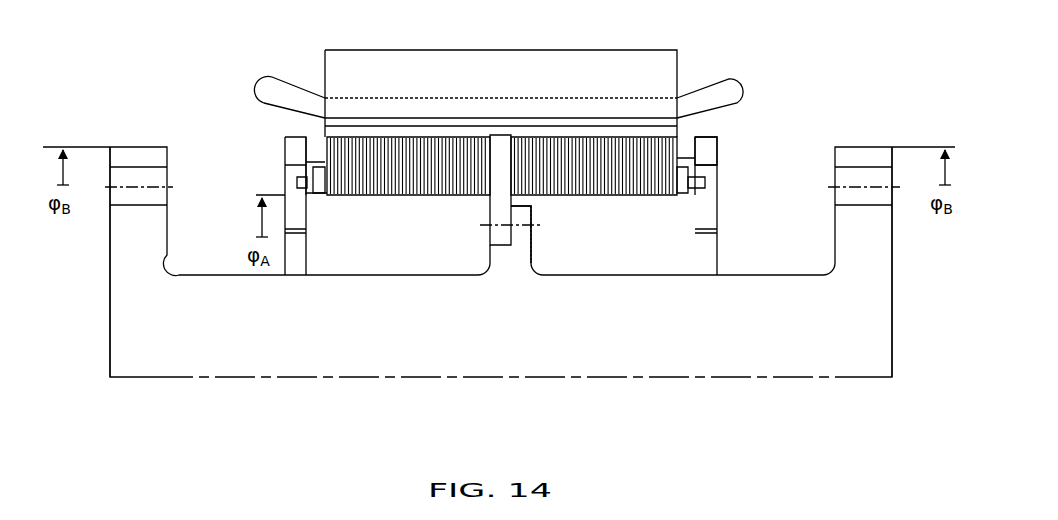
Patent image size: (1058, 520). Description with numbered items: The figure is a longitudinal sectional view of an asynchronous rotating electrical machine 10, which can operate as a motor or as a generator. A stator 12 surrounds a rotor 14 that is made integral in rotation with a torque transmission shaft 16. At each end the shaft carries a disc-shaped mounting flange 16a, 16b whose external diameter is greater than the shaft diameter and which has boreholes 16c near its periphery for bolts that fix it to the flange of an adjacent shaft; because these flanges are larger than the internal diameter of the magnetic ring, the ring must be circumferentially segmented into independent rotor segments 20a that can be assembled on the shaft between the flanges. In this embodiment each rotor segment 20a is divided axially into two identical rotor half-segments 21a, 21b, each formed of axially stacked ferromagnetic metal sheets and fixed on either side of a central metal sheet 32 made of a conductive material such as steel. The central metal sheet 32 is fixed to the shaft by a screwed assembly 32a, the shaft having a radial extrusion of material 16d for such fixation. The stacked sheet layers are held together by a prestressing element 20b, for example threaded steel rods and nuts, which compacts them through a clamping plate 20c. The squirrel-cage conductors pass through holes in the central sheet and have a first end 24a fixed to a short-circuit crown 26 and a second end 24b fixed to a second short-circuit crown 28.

The asynchronous rotating electrical machine 10 is at (824, 94).
The stator 12 is at (662, 62).
The rotor 14 is at (714, 131).
The torque transmission shaft 16 is at (802, 362).
The mounting flange 16a is at (126, 325).
The mounting flange 16b is at (878, 286).
The boreholes 16c is at (128, 167).
The radial extrusion of material 16d is at (520, 263).
The rotor segment 20a is at (712, 178).
The prestressing element 20b is at (297, 182).
The clamping plate 20c is at (320, 196).
The rotor half-segment 21a is at (406, 198).
The rotor half-segment 21b is at (653, 198).
The first end of conductive element 24a is at (315, 147).
The second end of conductive element 24b is at (688, 150).
The short-circuit crown 26 is at (290, 145).
The second short-circuit crown 28 is at (717, 153).
The central metal sheet 32 is at (490, 218).
The screwed assembly 32a is at (490, 232).